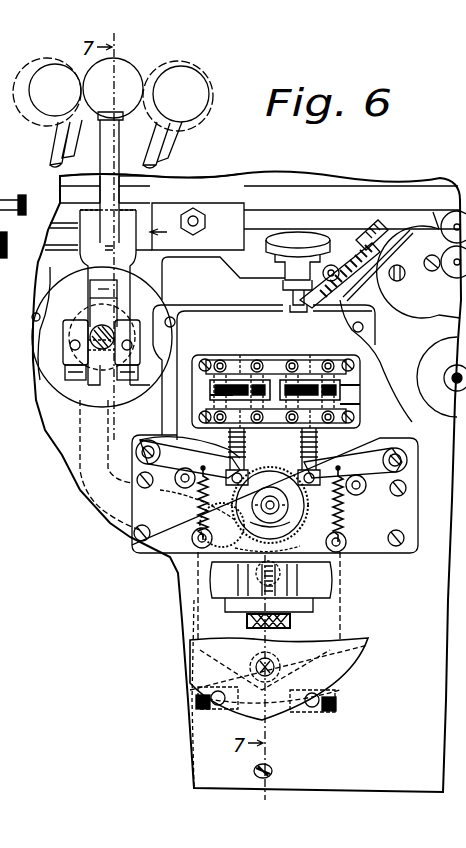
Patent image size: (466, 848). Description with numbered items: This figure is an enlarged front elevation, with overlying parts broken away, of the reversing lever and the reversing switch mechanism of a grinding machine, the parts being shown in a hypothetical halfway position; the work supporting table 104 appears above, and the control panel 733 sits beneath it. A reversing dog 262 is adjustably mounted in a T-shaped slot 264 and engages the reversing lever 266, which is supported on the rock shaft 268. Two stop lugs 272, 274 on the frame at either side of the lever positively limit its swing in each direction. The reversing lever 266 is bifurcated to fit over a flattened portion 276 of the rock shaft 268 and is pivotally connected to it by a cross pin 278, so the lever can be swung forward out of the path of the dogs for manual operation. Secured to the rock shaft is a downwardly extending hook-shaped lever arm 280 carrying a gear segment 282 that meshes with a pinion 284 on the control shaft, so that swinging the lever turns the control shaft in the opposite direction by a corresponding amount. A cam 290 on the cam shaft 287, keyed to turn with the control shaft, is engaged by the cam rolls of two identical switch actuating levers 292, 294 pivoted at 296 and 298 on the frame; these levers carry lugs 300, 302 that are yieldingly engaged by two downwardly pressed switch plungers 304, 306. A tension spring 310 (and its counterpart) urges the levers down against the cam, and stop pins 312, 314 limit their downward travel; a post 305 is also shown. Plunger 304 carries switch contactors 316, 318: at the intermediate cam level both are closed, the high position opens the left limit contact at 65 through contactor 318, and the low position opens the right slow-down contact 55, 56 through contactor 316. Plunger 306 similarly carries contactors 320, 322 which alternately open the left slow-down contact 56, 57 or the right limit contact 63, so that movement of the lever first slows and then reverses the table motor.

The right slow-down switch contact 55 is at (218, 362).
The slow-down switch contact 56 is at (283, 362).
The left slow-down switch contact 57 is at (356, 366).
The right limit switch contact 63 is at (325, 456).
The left limit switch contact 65 is at (228, 456).
The work supporting table 104 is at (233, 180).
The reversing dog 262 is at (246, 208).
The T-shaped slot 264 is at (147, 208).
The reversing lever 266 is at (128, 72).
The rock shaft 268 is at (102, 337).
The stop lug 272 is at (42, 262).
The stop lug 274 is at (162, 262).
The flattened portion 276 is at (118, 298).
The cross pin 278 is at (116, 350).
The hook-shaped lever arm 280 is at (88, 438).
The gear segment 282 is at (171, 508).
The pinion 284 is at (271, 544).
The cam shaft 287 is at (278, 495).
The cam 290 is at (300, 512).
The switch actuating lever 292 is at (188, 459).
The switch actuating lever 294 is at (355, 463).
The pivot 296 is at (147, 452).
The pivot 298 is at (400, 455).
The lug 300 is at (220, 462).
The lug 302 is at (324, 504).
The switch plunger 304 is at (238, 365).
The post 305 is at (221, 541).
The switch plunger 306 is at (308, 365).
The tension spring 310 is at (345, 540).
The stop pin 312 is at (182, 500).
The stop pin 314 is at (360, 495).
The switch contactor 316 is at (225, 386).
The switch contactor 318 is at (210, 395).
The contactor 320 is at (360, 385).
The contactor 322 is at (360, 404).
The control panel 733 is at (380, 741).